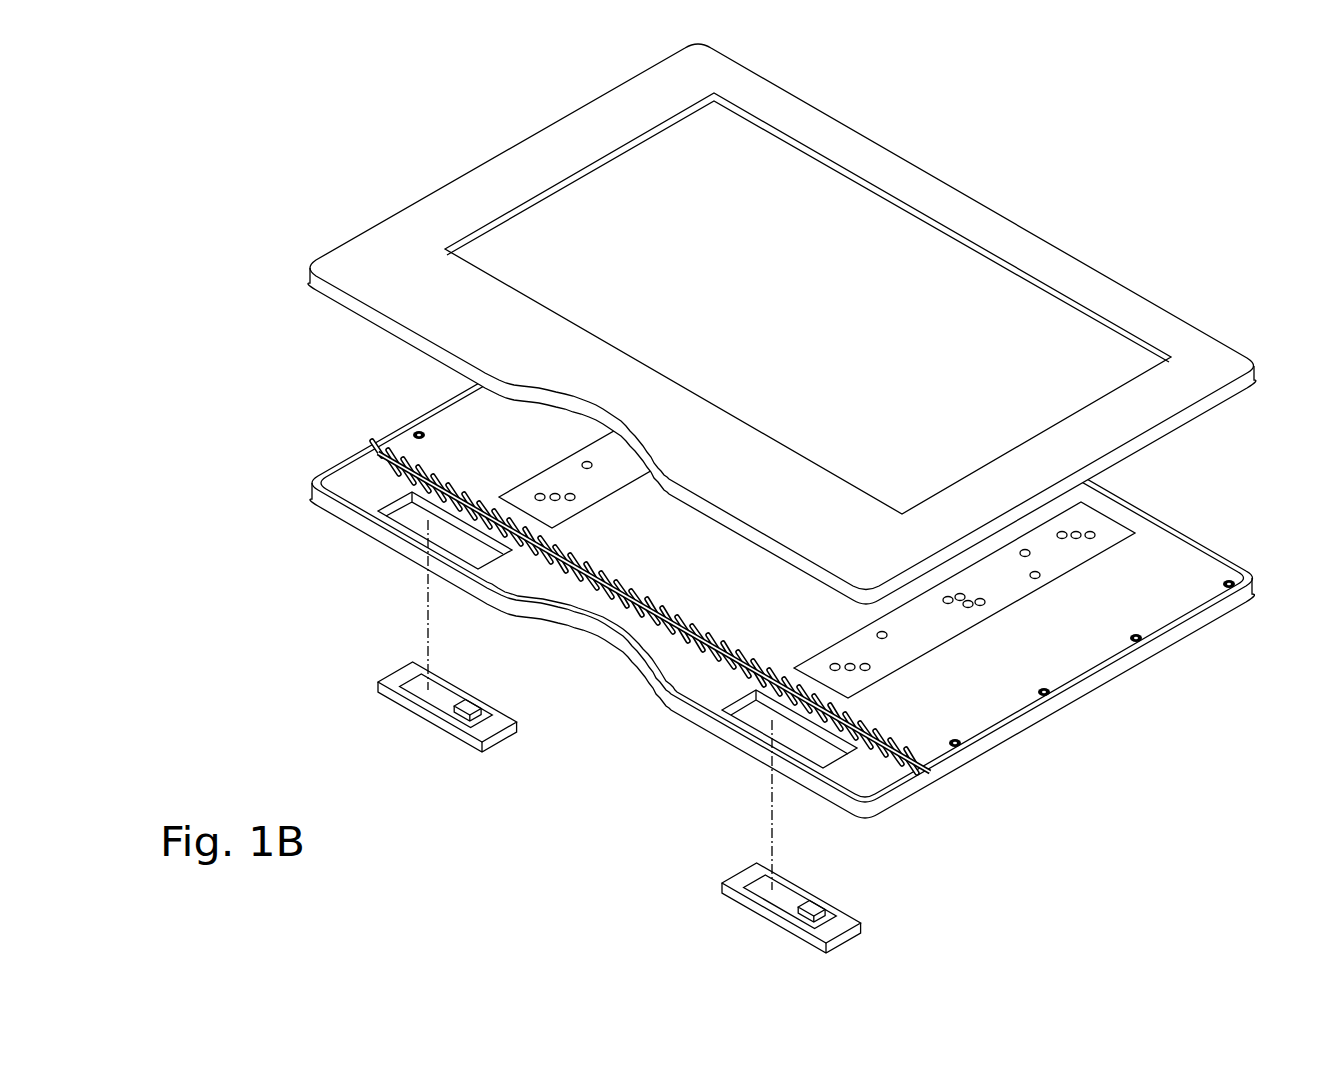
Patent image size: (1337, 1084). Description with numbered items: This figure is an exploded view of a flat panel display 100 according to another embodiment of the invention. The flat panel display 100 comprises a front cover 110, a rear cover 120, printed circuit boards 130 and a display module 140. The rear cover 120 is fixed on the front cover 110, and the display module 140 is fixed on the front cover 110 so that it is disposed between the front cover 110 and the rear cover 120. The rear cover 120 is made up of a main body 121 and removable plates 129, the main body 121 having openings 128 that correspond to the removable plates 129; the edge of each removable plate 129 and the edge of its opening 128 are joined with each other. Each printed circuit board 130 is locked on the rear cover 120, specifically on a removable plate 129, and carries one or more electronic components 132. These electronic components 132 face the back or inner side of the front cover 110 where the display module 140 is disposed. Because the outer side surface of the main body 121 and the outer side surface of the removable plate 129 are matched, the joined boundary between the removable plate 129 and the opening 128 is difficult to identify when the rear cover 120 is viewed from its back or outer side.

The flat panel display 100 is at (193, 173).
The front cover 110 is at (782, 324).
The display module 140 is at (858, 257).
The rear cover 120 is at (790, 549).
The main body 121 is at (872, 778).
The opening 128 is at (402, 524).
The removable plate 129 is at (385, 692).
The printed circuit board 130 is at (418, 682).
The electronic components 132 is at (473, 727).